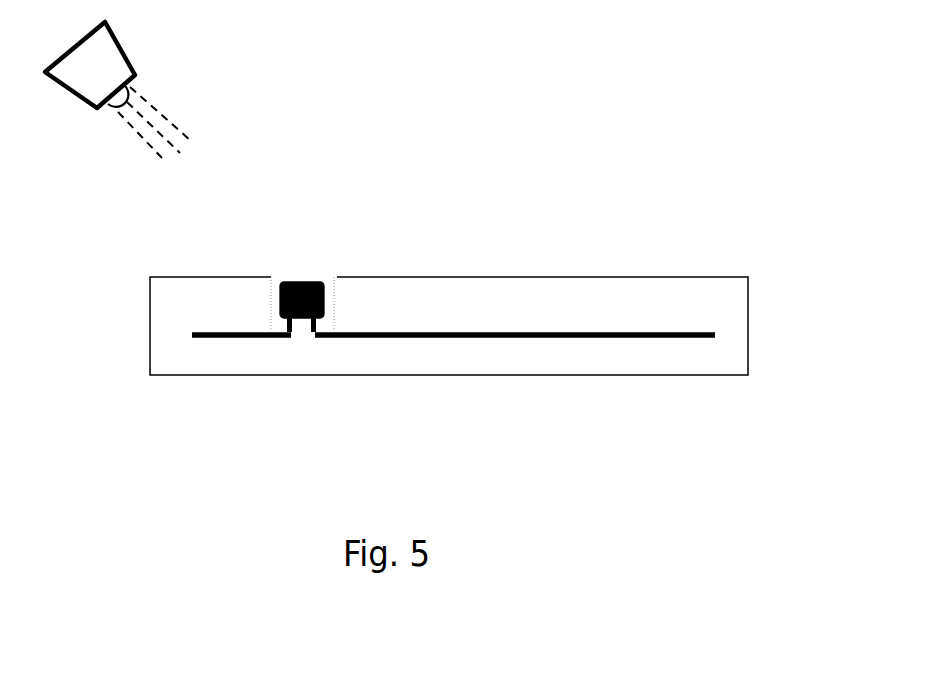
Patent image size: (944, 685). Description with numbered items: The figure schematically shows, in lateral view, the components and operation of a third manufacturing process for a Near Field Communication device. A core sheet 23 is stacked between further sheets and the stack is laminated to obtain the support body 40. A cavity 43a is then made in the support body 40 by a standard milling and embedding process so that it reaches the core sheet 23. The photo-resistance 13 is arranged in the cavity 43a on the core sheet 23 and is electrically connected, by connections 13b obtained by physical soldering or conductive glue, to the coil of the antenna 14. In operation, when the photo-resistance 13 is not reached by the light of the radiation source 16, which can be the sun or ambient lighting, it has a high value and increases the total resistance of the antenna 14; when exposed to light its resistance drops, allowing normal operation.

The radiation source 16 is at (110, 45).
The photo-resistance 13 is at (286, 281).
The connections 13b is at (309, 318).
The cavity 43a is at (333, 273).
The core sheet 23 is at (457, 316).
The antenna 14 is at (457, 365).
The support body 40 is at (750, 327).